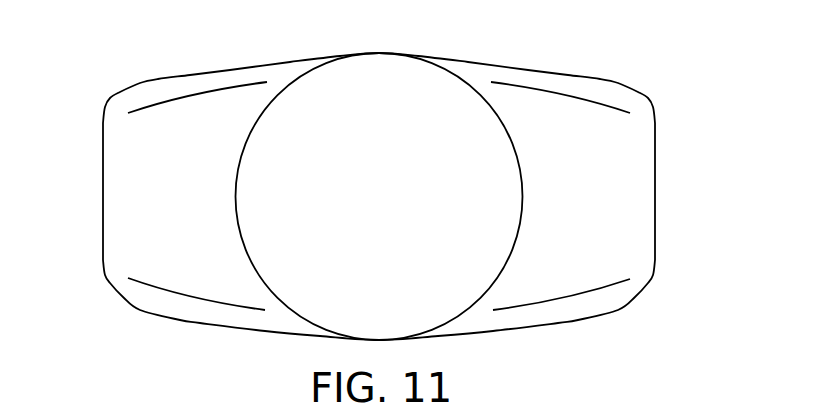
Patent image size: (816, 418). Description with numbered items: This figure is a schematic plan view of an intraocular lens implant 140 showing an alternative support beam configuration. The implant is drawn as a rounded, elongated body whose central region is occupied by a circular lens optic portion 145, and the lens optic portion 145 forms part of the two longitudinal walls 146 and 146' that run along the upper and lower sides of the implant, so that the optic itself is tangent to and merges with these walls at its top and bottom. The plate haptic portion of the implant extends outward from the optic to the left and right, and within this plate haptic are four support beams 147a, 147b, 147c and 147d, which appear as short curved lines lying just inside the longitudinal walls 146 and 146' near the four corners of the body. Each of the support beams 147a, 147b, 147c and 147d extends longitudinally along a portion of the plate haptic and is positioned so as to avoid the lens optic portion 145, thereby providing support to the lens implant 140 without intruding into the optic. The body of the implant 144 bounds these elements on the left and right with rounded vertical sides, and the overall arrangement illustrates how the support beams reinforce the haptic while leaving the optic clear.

The lens implant 140 is at (677, 203).
The housing body 144 is at (128, 200).
The lens optic portion 145 is at (221, 182).
The longitudinal wall 146 is at (379, 66).
The longitudinal wall 146' is at (379, 328).
The support beam 147a is at (602, 103).
The support beam 147b is at (208, 90).
The support beam 147c is at (190, 302).
The support beam 147d is at (580, 297).